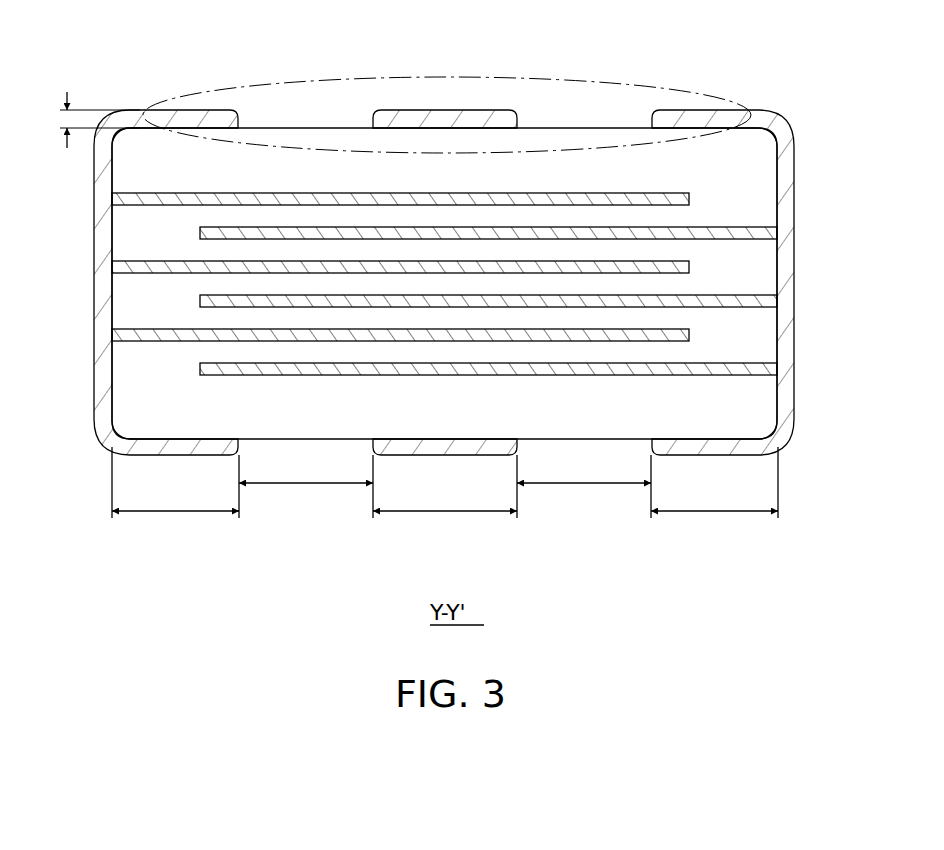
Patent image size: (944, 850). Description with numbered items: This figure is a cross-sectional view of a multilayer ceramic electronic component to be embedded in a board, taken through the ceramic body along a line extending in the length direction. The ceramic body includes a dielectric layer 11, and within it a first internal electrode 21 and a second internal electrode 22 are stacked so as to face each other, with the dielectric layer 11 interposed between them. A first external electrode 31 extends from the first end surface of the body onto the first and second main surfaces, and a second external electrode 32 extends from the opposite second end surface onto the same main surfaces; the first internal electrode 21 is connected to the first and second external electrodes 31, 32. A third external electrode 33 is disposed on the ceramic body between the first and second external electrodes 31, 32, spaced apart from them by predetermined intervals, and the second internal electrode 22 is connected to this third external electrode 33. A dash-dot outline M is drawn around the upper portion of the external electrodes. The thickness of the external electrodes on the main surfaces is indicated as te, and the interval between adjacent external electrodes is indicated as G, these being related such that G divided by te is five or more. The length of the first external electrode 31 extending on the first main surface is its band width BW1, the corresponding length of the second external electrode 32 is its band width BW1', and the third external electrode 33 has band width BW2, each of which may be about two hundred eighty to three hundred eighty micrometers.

The dielectric layer 11 is at (767, 333).
The first internal electrode 21 is at (158, 206).
The second internal electrode 22 is at (730, 240).
The first external electrode 31 is at (168, 118).
The second external electrode 32 is at (727, 118).
The third external electrode 33 is at (443, 118).
The mounting region M is at (532, 78).
The thickness of external electrodes te is at (88, 120).
The interval between adjacent external electrodes G is at (445, 486).
The band width of first external electrode BW1 is at (175, 493).
The band width of third external electrode BW2 is at (445, 497).
The band width of second external electrode BW1' is at (714, 493).